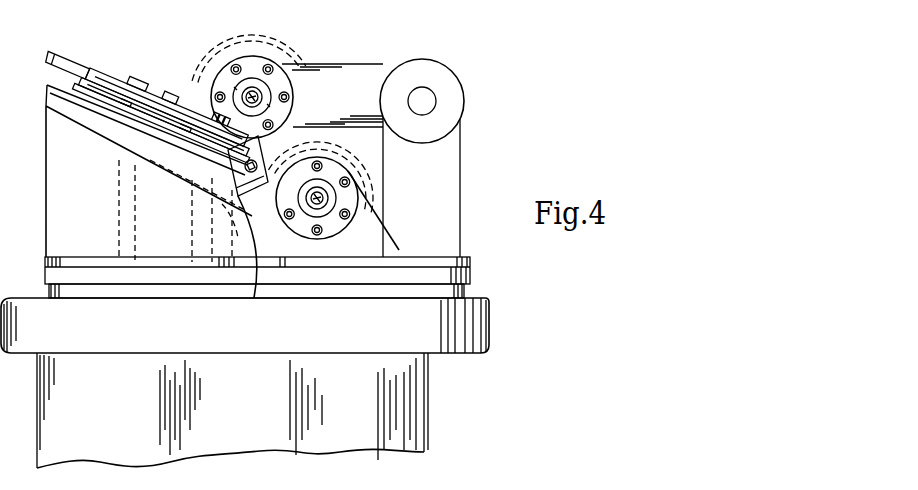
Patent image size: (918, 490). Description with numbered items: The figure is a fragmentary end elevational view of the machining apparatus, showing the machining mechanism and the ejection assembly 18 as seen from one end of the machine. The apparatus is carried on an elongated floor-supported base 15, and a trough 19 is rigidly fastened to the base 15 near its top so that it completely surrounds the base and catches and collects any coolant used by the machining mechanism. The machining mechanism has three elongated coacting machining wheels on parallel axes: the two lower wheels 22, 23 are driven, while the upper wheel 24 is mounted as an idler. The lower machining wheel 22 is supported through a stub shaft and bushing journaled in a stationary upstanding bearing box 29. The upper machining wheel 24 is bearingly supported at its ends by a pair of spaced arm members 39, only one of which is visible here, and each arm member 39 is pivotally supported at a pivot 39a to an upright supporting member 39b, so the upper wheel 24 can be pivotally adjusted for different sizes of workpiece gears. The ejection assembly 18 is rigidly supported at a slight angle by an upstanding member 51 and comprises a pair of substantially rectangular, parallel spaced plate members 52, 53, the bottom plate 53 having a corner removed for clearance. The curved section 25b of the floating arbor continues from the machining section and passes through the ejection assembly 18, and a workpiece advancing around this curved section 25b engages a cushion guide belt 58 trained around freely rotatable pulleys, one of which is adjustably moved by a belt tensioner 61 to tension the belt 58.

The base 15 is at (412, 431).
The ejection assembly 18 is at (136, 75).
The trough 19 is at (484, 330).
The lower machining wheel 22 is at (379, 174).
The lower machining wheel 23 is at (257, 254).
The upper machining wheel 24 is at (283, 58).
The curved section of the arbor 25b is at (69, 60).
The bearing box 29 is at (371, 235).
The arm member 39 is at (379, 70).
The pivot 39a is at (423, 101).
The upright supporting member 39b is at (455, 176).
The upstanding member 51 is at (55, 180).
The plate member 52 is at (197, 80).
The bottom plate member 53 is at (152, 174).
The cushion guide belt 58 is at (146, 104).
The belt tensioner 61 is at (276, 140).